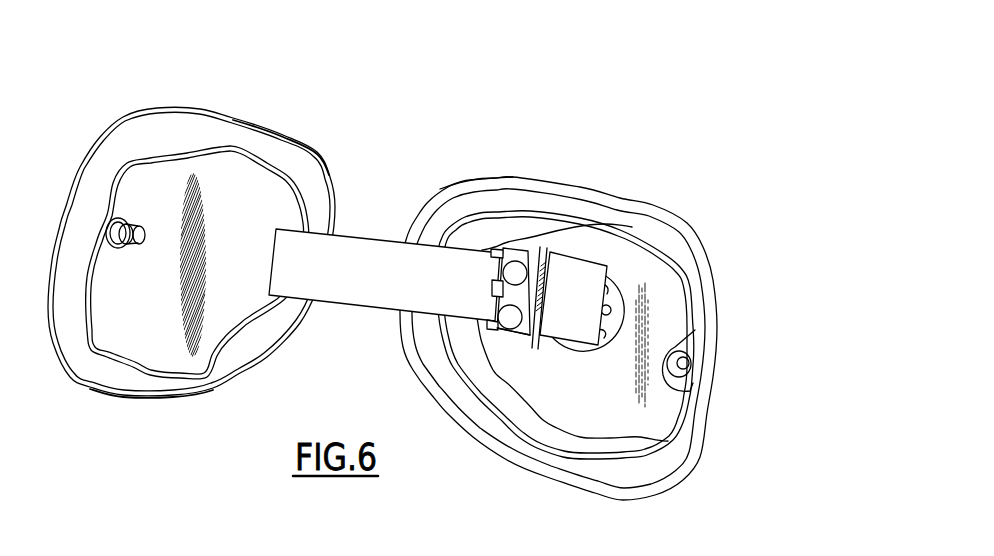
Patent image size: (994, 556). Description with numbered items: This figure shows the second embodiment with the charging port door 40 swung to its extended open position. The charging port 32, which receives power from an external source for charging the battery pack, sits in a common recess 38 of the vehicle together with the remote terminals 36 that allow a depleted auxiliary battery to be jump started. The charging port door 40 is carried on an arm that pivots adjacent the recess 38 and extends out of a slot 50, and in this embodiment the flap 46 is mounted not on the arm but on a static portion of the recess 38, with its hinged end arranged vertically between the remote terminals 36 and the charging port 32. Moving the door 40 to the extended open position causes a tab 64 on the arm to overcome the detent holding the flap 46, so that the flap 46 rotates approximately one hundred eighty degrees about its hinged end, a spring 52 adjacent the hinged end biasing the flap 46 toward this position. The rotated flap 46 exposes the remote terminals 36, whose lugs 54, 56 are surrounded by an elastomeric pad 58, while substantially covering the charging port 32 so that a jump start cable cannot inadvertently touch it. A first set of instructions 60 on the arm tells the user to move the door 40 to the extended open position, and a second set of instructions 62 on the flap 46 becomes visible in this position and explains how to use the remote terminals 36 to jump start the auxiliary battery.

The charging port 32 is at (619, 292).
The remote terminals 36 is at (506, 336).
The recess 38 is at (670, 312).
The charging port door 40 is at (72, 200).
The flap 46 is at (572, 253).
The slot 50 is at (492, 287).
The spring 52 is at (541, 248).
The lug 54 is at (520, 262).
The lug 56 is at (508, 320).
The elastomeric pad 58 is at (497, 331).
The first set of instructions 60 is at (349, 293).
The second set of instructions 62 is at (572, 322).
The tab 64 is at (438, 211).